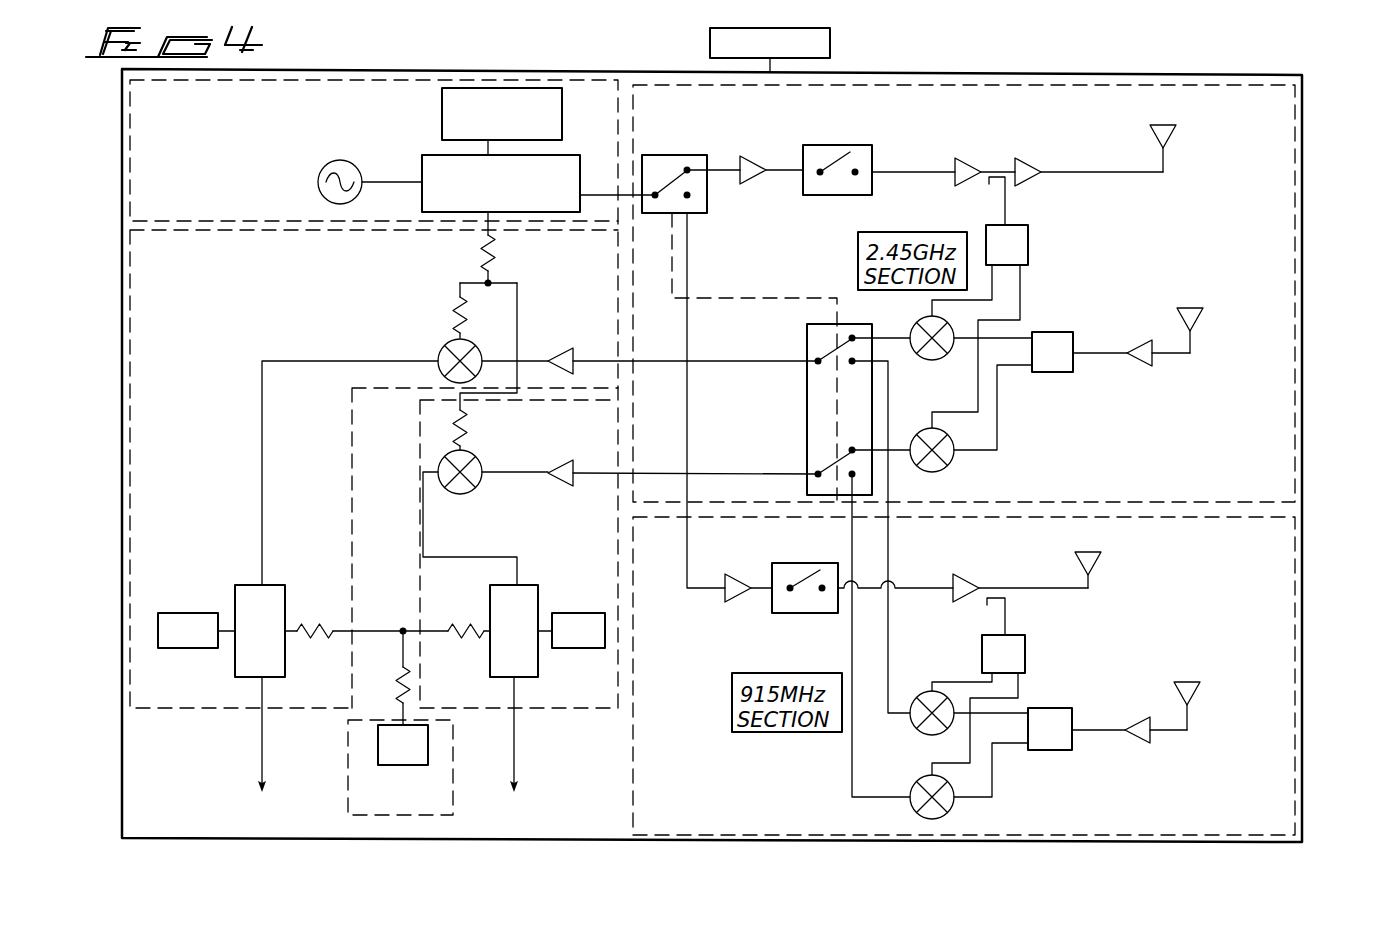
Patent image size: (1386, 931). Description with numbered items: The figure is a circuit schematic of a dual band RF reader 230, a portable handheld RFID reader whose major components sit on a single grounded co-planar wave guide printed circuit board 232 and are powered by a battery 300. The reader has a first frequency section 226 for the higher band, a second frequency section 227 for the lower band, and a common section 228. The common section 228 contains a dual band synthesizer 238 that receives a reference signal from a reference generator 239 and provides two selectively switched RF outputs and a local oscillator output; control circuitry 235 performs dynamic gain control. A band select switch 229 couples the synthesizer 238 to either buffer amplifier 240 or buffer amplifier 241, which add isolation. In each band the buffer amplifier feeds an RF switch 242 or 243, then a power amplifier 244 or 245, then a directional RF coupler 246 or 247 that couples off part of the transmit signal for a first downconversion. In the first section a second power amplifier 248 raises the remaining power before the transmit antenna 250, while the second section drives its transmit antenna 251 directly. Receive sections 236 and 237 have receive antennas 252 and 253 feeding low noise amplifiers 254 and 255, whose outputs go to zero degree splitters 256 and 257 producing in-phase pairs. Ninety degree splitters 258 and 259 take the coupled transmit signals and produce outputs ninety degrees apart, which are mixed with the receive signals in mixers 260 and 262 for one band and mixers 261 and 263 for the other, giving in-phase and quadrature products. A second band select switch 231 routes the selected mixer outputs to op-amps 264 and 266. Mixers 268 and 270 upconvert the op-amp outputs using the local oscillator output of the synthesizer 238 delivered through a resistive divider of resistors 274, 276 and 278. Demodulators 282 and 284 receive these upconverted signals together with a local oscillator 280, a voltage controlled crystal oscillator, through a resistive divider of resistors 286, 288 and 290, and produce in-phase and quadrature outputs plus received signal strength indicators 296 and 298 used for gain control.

The first frequency section 226 is at (1302, 190).
The second frequency section 227 is at (1302, 590).
The common section 228 is at (128, 148).
The band select switch 229 is at (670, 155).
The RF reader 230 is at (572, 60).
The band select switch 231 is at (807, 353).
The printed circuit board 232 is at (1020, 72).
The control circuitry 235 is at (442, 108).
The receive section 236 is at (128, 455).
The receive section 237 is at (566, 712).
The synthesizer 238 is at (422, 185).
The reference generator 239 is at (328, 167).
The buffer amplifier 240 is at (735, 178).
The buffer amplifier 241 is at (725, 593).
The RF switch 242 is at (835, 146).
The RF switch 243 is at (803, 613).
The power amplifier 244 is at (955, 166).
The power amplifier 245 is at (978, 582).
The directional RF coupler 246 is at (1000, 190).
The directional RF coupler 247 is at (1005, 601).
The second power amplifier 248 is at (1043, 178).
The transmit antenna 250 is at (1176, 142).
The transmit antenna 251 is at (1098, 557).
The receive antenna 252 is at (1205, 320).
The receive antenna 253 is at (1195, 689).
The low noise amplifier 254 is at (1155, 362).
The low noise amplifier 255 is at (1150, 739).
The 0 degrees splitter 256 is at (1040, 373).
The 0 degrees splitter 257 is at (1070, 750).
The 90 degrees splitter 258 is at (1028, 264).
The 90 degrees splitter 259 is at (982, 661).
The mixer 260 is at (914, 321).
The mixer 261 is at (955, 736).
The mixer 262 is at (960, 463).
The mixer 263 is at (960, 809).
The op-amp 264 is at (556, 346).
The op-amp 266 is at (558, 481).
The mixer 268 is at (432, 347).
The mixer 270 is at (432, 462).
The resistor 274 is at (496, 257).
The resistor 276 is at (452, 309).
The resistor 278 is at (452, 433).
The local oscillator 280 is at (405, 766).
The demodulator 282 is at (270, 585).
The demodulator 284 is at (540, 602).
The resistor 286 is at (318, 640).
The resistor 288 is at (462, 640).
The resistor 290 is at (398, 690).
The Received Signal Strength Indicator 296 is at (186, 650).
The Received Signal Strength Indicator 298 is at (572, 650).
The battery 300 is at (710, 42).